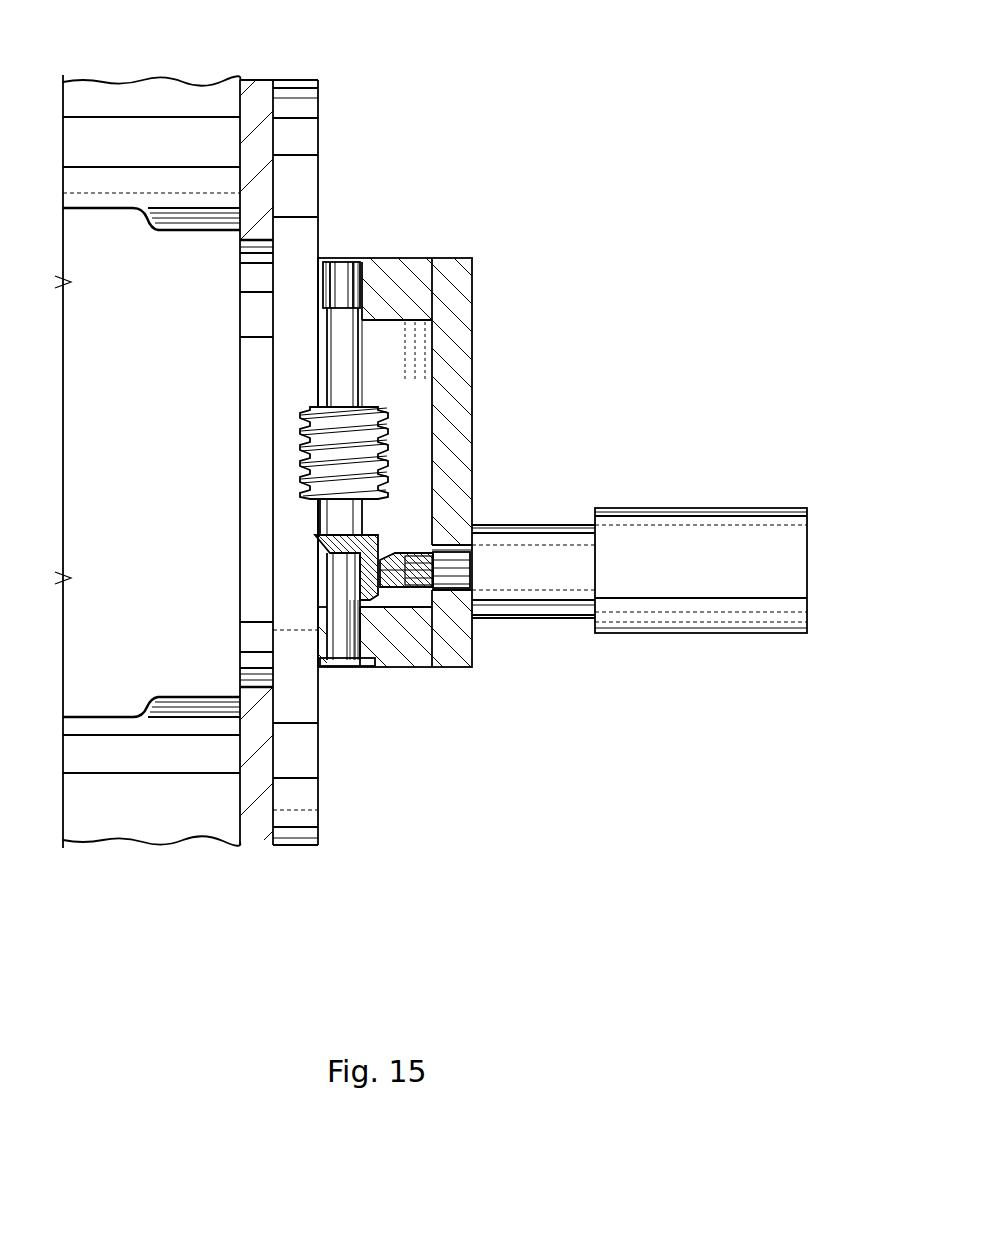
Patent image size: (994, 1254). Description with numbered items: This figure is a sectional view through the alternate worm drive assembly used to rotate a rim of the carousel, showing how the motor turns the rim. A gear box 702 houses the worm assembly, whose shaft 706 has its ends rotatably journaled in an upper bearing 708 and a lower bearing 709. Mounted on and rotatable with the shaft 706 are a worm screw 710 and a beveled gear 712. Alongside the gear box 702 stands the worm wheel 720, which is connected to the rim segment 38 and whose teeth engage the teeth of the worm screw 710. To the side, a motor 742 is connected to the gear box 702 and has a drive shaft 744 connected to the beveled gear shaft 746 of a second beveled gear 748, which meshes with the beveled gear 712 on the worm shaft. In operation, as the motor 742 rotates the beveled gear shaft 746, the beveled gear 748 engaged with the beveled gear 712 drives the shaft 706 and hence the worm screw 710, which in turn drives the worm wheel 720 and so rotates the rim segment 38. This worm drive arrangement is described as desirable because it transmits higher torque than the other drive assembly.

The rim segment 38 is at (257, 112).
The worm wheel 720 is at (308, 137).
The gear box 702 is at (455, 312).
The bearing 708 is at (360, 275).
The worm screw 710 is at (317, 447).
The beveled gear 712 is at (317, 537).
The shaft 706 is at (330, 587).
The bearing 709 is at (362, 660).
The beveled gear 748 is at (385, 552).
The beveled gear shaft 746 is at (415, 568).
The drive shaft 744 is at (472, 567).
The motor 742 is at (670, 610).